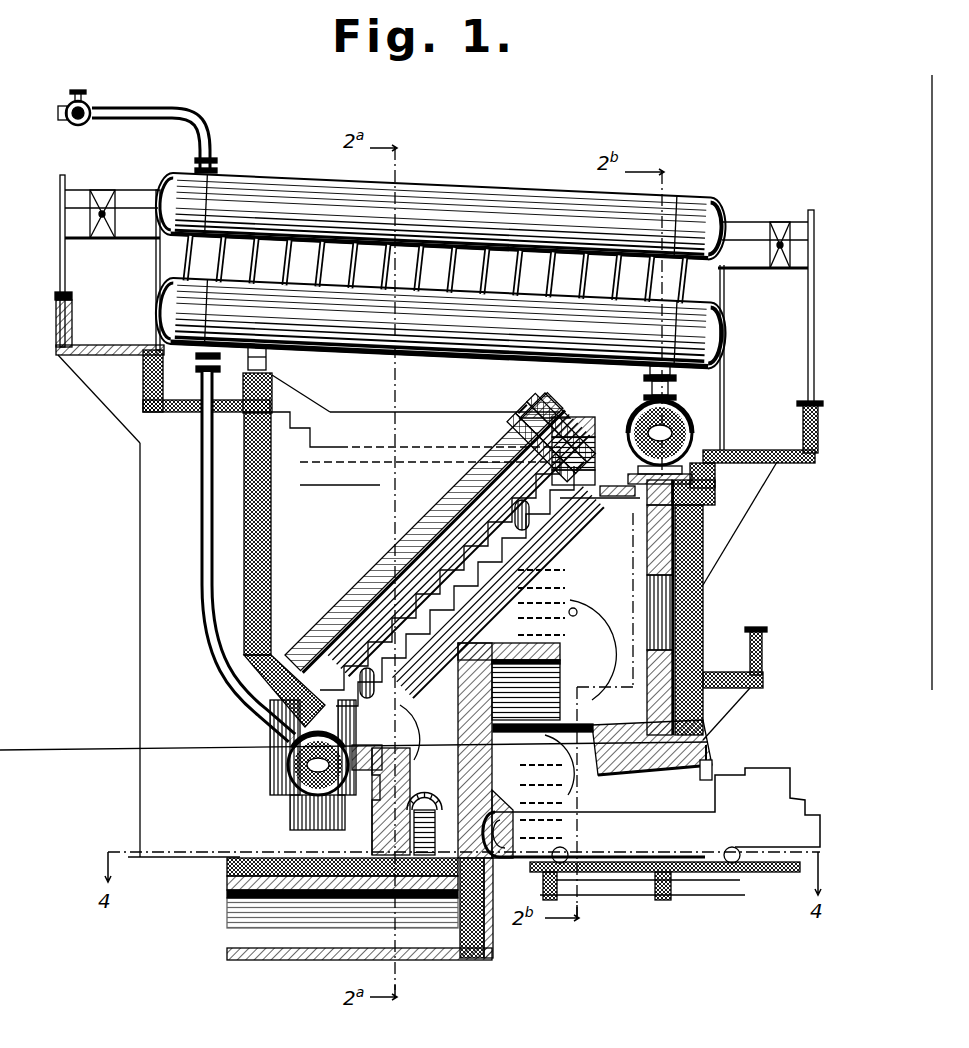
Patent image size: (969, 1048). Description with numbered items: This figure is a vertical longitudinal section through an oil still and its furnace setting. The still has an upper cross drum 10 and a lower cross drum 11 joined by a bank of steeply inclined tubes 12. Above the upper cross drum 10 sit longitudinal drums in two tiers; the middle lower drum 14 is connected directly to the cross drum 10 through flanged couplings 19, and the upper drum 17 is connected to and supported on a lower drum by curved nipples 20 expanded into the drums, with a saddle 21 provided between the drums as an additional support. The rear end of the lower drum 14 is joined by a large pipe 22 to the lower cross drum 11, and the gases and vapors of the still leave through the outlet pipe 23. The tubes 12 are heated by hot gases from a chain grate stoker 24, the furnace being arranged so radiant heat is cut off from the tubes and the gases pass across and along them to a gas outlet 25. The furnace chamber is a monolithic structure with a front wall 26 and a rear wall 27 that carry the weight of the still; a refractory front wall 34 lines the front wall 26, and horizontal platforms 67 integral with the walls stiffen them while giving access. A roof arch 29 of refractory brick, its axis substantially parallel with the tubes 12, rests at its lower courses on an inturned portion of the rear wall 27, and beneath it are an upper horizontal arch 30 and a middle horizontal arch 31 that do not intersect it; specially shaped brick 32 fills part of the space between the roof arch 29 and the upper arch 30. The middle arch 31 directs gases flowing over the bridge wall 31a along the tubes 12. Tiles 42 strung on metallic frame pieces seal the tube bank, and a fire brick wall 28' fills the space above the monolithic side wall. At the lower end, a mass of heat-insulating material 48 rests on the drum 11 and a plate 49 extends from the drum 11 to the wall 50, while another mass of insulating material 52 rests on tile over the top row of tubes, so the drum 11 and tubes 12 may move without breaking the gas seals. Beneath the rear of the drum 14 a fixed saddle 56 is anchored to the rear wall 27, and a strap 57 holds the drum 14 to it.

The upper cross drum 10 is at (695, 432).
The lower cross drum 11 is at (286, 768).
The steeply inclined tubes 12 is at (446, 642).
The middle lower longitudinal drum 14 is at (468, 368).
The upper longitudinal drum 17 is at (462, 195).
The flanged coupling 19 is at (695, 392).
The curved nipples 20 is at (352, 268).
The saddle 21 is at (592, 242).
The pipe 22 is at (206, 545).
The outlet pipe 23 is at (178, 108).
The chain grate stoker 24 is at (410, 810).
The gas outlet 25 is at (240, 933).
The front wall 26 is at (703, 550).
The rear wall 27 is at (272, 510).
The fire brick wall 28' is at (565, 437).
The roof arch 29 is at (447, 506).
The upper horizontal arch 30 is at (590, 442).
The middle horizontal arch 31 is at (432, 524).
The bridge wall 31a is at (478, 690).
The specially shaped refractory brick 32 is at (574, 424).
The refractory front wall 34 is at (650, 555).
The tiles 42 is at (630, 500).
The heat-insulating material 48 is at (362, 760).
The plate 49 is at (352, 792).
The wall 50 is at (408, 778).
The heat-insulating material 52 is at (304, 642).
The fixed saddle 56 is at (268, 358).
The strap 57 is at (305, 356).
The horizontal platforms 67 is at (100, 352).